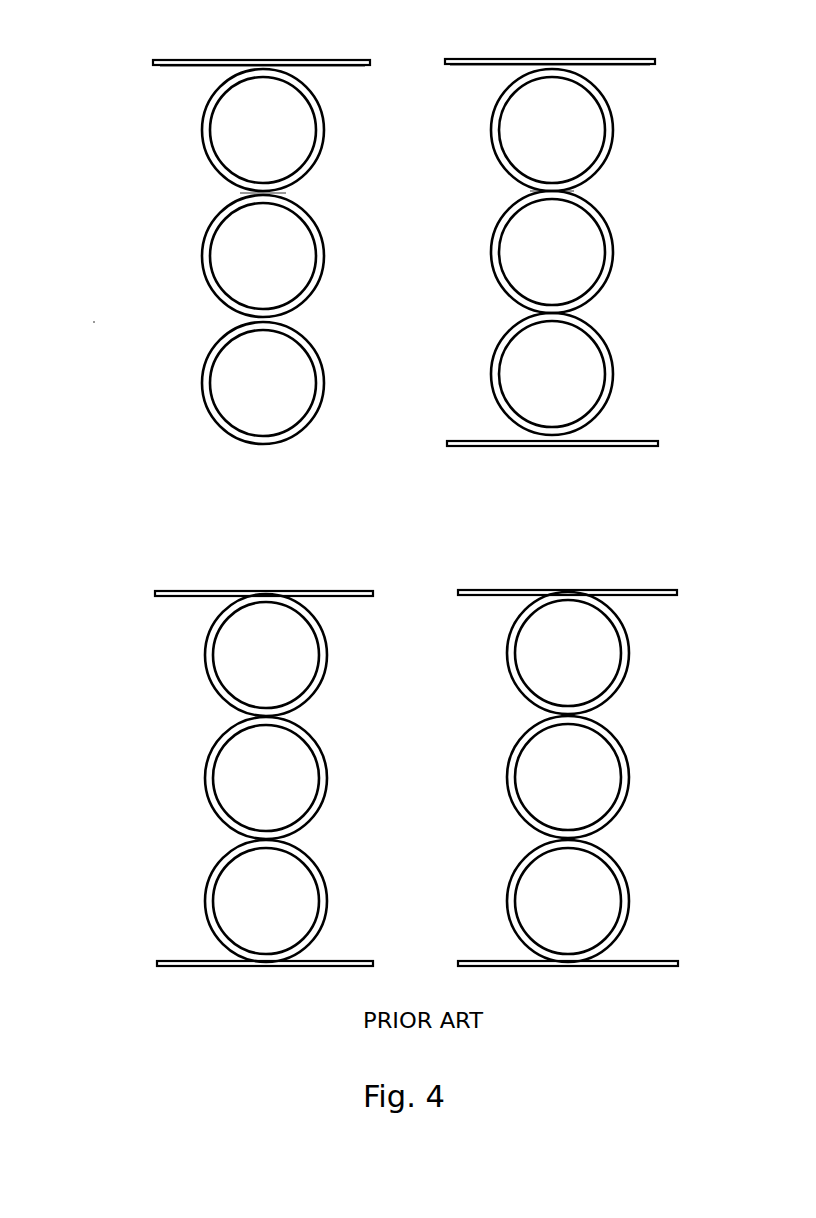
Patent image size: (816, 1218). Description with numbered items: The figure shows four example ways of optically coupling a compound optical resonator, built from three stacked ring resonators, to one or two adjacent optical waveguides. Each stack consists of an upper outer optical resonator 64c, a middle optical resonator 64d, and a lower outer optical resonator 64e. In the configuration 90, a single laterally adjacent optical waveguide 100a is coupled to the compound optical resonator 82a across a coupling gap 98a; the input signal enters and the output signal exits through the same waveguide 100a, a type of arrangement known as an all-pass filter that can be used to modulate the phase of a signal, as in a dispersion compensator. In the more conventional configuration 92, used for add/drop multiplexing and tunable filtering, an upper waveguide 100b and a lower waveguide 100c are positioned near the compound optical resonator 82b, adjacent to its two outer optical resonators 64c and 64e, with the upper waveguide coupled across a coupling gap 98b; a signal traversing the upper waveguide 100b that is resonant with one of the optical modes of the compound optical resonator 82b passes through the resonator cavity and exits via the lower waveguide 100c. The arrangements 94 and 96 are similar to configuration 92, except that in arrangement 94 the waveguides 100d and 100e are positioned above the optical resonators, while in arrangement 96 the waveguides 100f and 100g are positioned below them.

The example configuration 90 is at (234, 161).
The example configuration 92 is at (559, 248).
The arrangement 94 is at (210, 784).
The arrangement 96 is at (610, 781).
The outer optical resonator 64c is at (222, 140).
The optical resonator 64d is at (222, 270).
The outer optical resonator 64e is at (222, 397).
The compound optical resonator 82a is at (328, 222).
The compound optical resonator 82b is at (482, 258).
The coupling gap 98a is at (225, 68).
The coupling gap 98b is at (573, 68).
The optical waveguide 100a is at (293, 60).
The upper optical waveguide 100b is at (600, 58).
The lower optical waveguide 100c is at (527, 447).
The optical waveguide 100d is at (293, 577).
The optical waveguide 100e is at (270, 977).
The optical waveguide 100f is at (527, 578).
The optical waveguide 100g is at (538, 978).